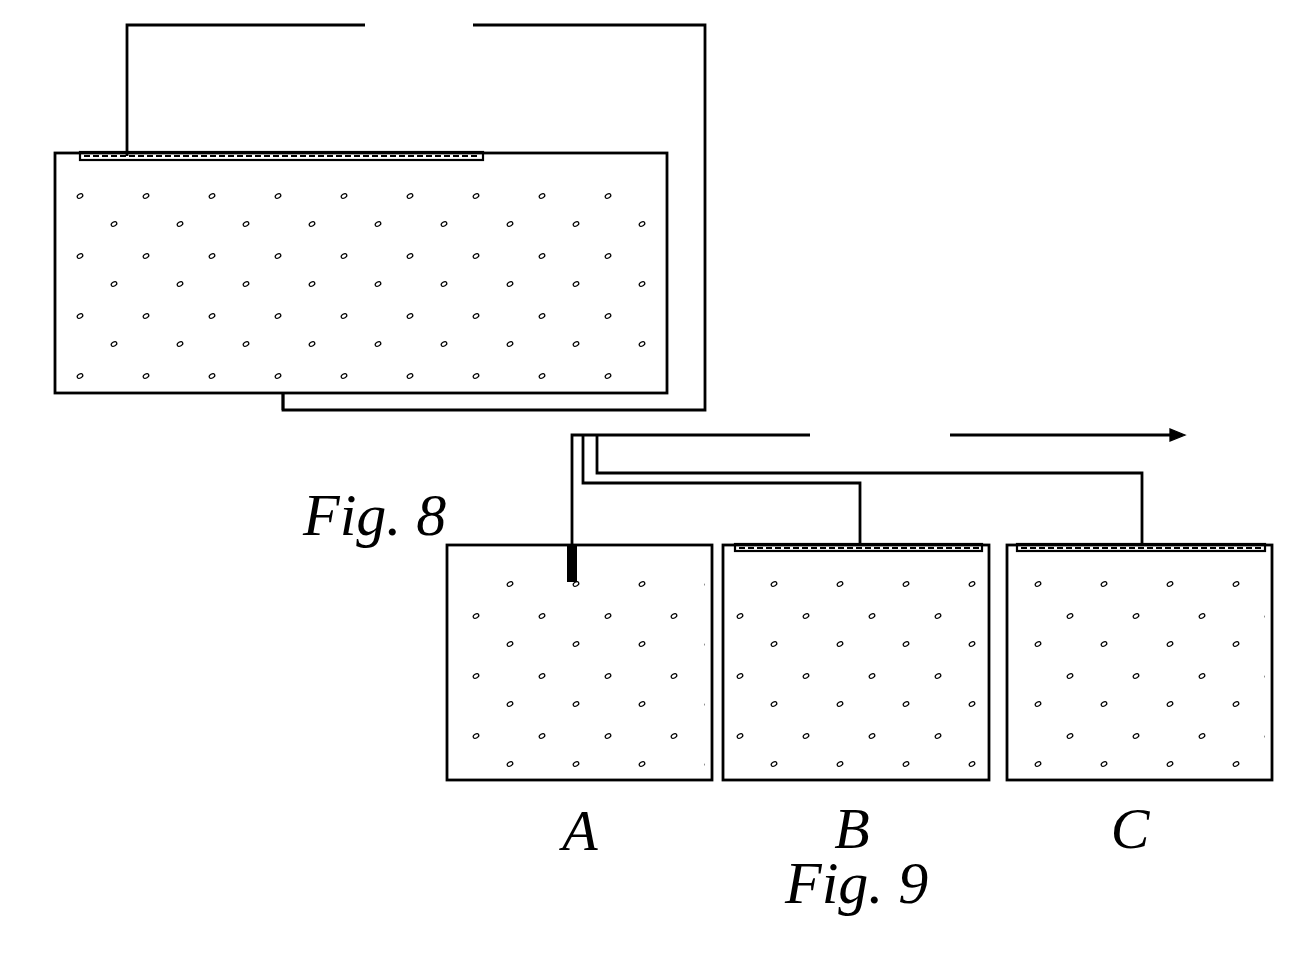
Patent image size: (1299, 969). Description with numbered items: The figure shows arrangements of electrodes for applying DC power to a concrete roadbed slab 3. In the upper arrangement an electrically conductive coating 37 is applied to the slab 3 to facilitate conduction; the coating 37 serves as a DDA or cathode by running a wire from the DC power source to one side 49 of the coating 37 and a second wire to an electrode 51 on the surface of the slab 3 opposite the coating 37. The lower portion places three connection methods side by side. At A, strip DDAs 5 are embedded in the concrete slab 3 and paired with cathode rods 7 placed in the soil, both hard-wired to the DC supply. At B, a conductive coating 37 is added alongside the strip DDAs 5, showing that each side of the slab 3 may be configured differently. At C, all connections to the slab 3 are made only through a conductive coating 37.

In FIG. 8, the concrete slab 3 is at (589, 377).
In FIG. 9, the concrete slab 3 is at (660, 771).
In FIG. 9, the strip DDA 5 is at (566, 566).
In FIG. 9, the cathode rods 7 is at (1148, 434).
In FIG. 8, the electrically conductive coating 37 is at (413, 152).
In FIG. 9, the electrically conductive coating 37 is at (1040, 545).
In FIG. 8, the side of the coating 49 is at (112, 153).
In FIG. 8, the electrode 51 is at (283, 396).